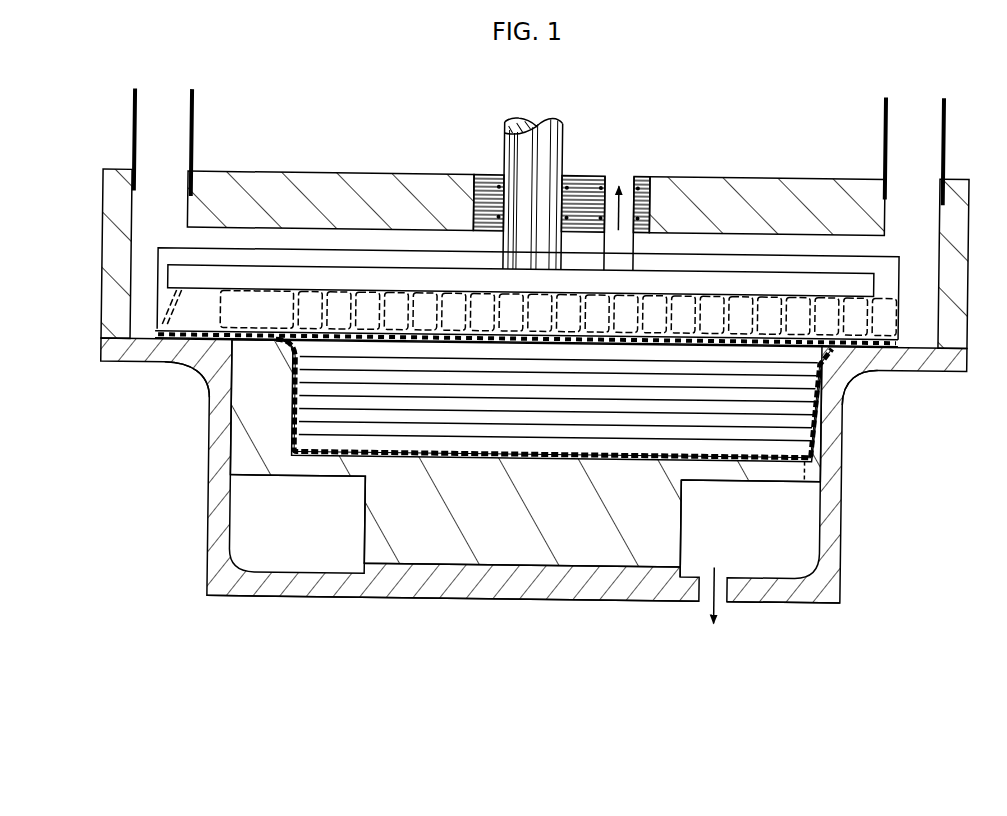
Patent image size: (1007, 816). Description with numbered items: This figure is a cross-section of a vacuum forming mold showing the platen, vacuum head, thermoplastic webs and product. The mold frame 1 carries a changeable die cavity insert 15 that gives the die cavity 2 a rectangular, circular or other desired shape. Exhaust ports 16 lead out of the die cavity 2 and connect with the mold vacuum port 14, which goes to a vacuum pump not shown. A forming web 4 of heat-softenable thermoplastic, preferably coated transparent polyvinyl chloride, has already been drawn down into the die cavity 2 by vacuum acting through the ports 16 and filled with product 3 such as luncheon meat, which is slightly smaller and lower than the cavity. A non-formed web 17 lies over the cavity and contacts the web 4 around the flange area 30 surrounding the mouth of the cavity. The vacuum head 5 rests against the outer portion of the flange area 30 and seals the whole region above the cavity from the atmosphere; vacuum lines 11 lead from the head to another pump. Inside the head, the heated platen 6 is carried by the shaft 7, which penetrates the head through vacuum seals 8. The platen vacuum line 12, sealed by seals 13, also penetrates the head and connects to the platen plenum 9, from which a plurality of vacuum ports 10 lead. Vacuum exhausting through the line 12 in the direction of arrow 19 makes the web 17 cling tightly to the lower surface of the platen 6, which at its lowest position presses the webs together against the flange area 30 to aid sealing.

The mold frame 1 is at (843, 506).
The die cavity 2 is at (289, 391).
The product 3 is at (518, 428).
The forming web 4 is at (815, 420).
The vacuum head 5 is at (101, 226).
The platen 6 is at (786, 248).
The shaft 7 is at (502, 155).
The vacuum seals 8 is at (560, 168).
The platen plenum 9 is at (438, 268).
The vacuum ports 10 is at (298, 287).
The vacuum lines 11 is at (192, 118).
The platen vacuum line 12 is at (633, 164).
The seals 13 is at (655, 172).
The mold vacuum port 14 is at (725, 600).
The die cavity insert 15 is at (500, 542).
The exhaust ports 16 is at (298, 468).
The non-formed web 17 is at (888, 333).
The arrow 19 is at (619, 192).
The flange area 30 is at (172, 355).